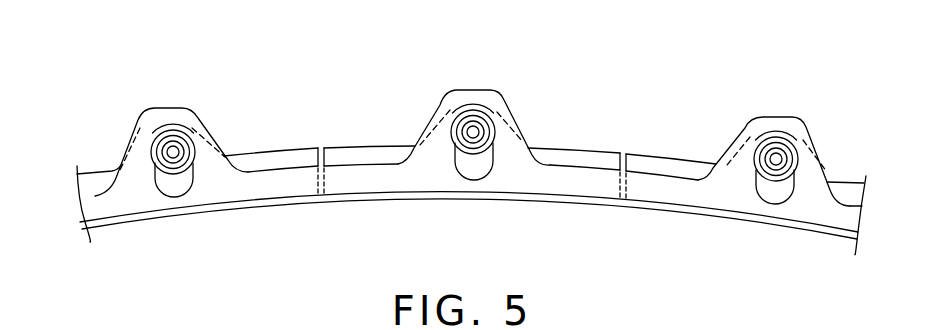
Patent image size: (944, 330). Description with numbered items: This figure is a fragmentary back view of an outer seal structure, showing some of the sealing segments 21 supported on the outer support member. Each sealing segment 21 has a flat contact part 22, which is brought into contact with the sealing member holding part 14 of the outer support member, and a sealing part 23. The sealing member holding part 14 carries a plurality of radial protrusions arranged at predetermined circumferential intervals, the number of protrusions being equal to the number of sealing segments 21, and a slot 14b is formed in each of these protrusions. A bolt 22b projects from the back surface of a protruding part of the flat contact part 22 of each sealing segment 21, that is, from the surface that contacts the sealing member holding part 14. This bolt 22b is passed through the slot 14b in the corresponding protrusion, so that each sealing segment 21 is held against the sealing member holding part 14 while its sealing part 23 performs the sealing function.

The sealing member holding part 14 is at (174, 107).
The slot 14b is at (193, 178).
The sealing segment 21 is at (403, 117).
The flat contact part 22 is at (137, 125).
The bolt 22b is at (172, 153).
The sealing part 23 is at (271, 150).